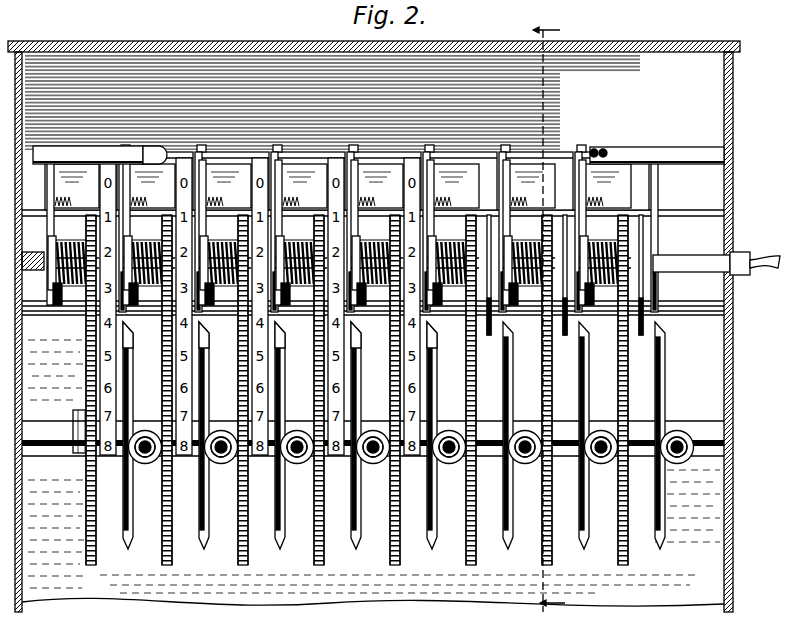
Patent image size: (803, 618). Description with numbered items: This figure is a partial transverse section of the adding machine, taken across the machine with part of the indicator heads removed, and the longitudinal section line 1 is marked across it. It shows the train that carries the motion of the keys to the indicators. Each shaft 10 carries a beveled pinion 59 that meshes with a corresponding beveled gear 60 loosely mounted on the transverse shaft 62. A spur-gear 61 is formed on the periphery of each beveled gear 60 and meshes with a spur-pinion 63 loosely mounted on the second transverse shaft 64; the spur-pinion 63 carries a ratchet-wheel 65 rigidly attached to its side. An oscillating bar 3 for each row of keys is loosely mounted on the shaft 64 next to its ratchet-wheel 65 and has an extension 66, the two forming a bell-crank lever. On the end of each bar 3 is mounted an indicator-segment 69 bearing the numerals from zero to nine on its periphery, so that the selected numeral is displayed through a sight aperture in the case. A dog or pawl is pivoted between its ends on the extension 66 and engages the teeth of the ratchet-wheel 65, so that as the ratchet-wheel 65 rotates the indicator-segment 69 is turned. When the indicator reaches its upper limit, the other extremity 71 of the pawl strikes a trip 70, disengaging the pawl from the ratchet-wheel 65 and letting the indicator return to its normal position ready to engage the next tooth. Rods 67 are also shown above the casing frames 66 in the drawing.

The section line 1 is at (549, 306).
The oscillating bar 3 is at (641, 336).
The shaft 10 is at (675, 438).
The beveled pinion 59 is at (685, 464).
The beveled gear 60 is at (662, 548).
The spur-gear 61 is at (620, 567).
The transverse shaft 62 is at (718, 445).
The spur-pinion 63 is at (620, 300).
The second transverse shaft 64 is at (700, 262).
The ratchet-wheel 65 is at (510, 238).
The extension 66 is at (560, 152).
The rod 67 is at (633, 154).
The indicator-segment 69 is at (412, 166).
The trip 70 is at (72, 306).
The extremity of the dog or pawl 71 is at (594, 148).